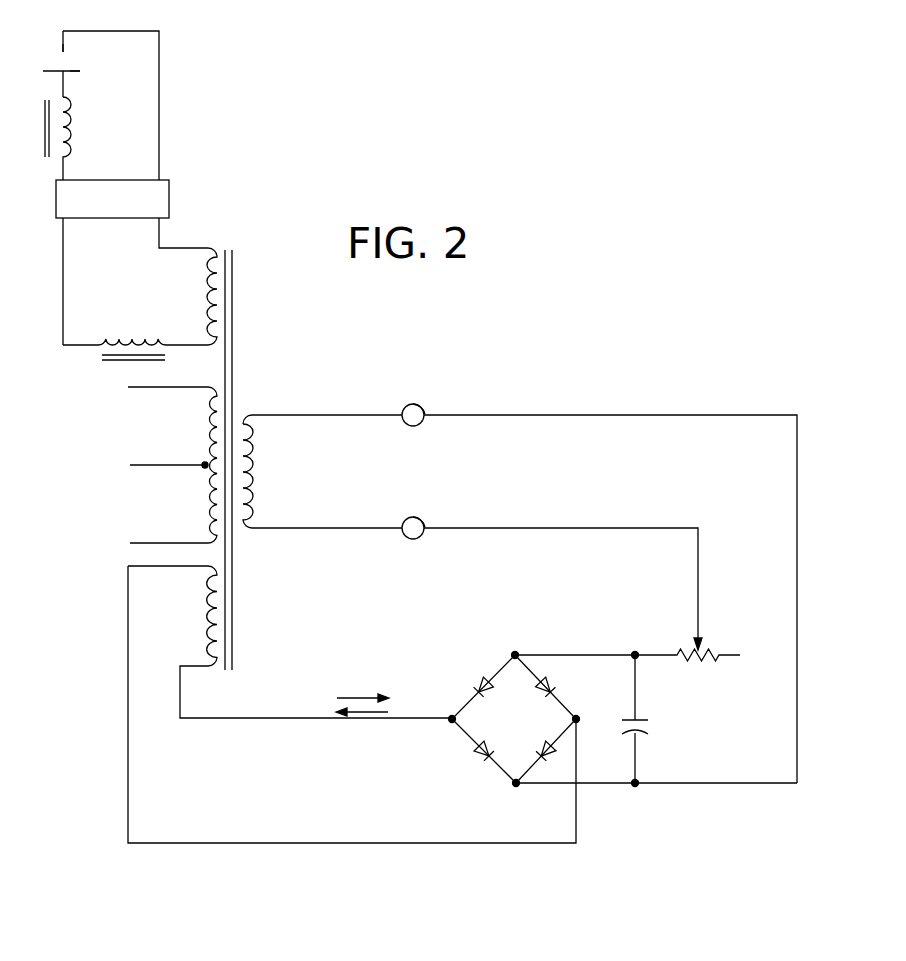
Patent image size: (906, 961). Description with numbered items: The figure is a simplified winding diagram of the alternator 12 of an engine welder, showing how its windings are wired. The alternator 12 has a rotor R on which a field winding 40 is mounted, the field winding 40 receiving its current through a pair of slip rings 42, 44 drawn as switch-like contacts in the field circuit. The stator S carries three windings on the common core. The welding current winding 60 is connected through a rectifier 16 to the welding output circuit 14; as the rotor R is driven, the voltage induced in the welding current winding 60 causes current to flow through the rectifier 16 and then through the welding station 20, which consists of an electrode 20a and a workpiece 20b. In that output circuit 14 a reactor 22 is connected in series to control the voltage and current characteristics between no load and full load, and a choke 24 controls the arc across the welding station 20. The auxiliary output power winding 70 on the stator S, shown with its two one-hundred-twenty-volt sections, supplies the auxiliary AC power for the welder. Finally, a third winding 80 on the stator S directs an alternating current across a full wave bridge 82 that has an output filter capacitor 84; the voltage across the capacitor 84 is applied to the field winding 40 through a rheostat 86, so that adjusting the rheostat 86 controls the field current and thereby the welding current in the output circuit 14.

The alternator 12 is at (293, 344).
The welding output circuit 14 is at (160, 120).
The rectifier 16 is at (158, 200).
The welding station 20 is at (79, 63).
The electrode 20a is at (63, 58).
The workpiece 20b is at (80, 73).
The reactor 22 is at (130, 336).
The choke 24 is at (72, 135).
The field winding 40 is at (258, 480).
The slip ring 42 is at (408, 540).
The slip ring 44 is at (420, 405).
The welding current winding 60 is at (201, 288).
The auxiliary output power winding 70 is at (200, 494).
The third winding 80 is at (200, 633).
The full wave bridge 82 is at (496, 771).
The capacitor 84 is at (645, 730).
The rheostat 86 is at (708, 646).
The stator S is at (230, 242).
The rotor R is at (280, 404).